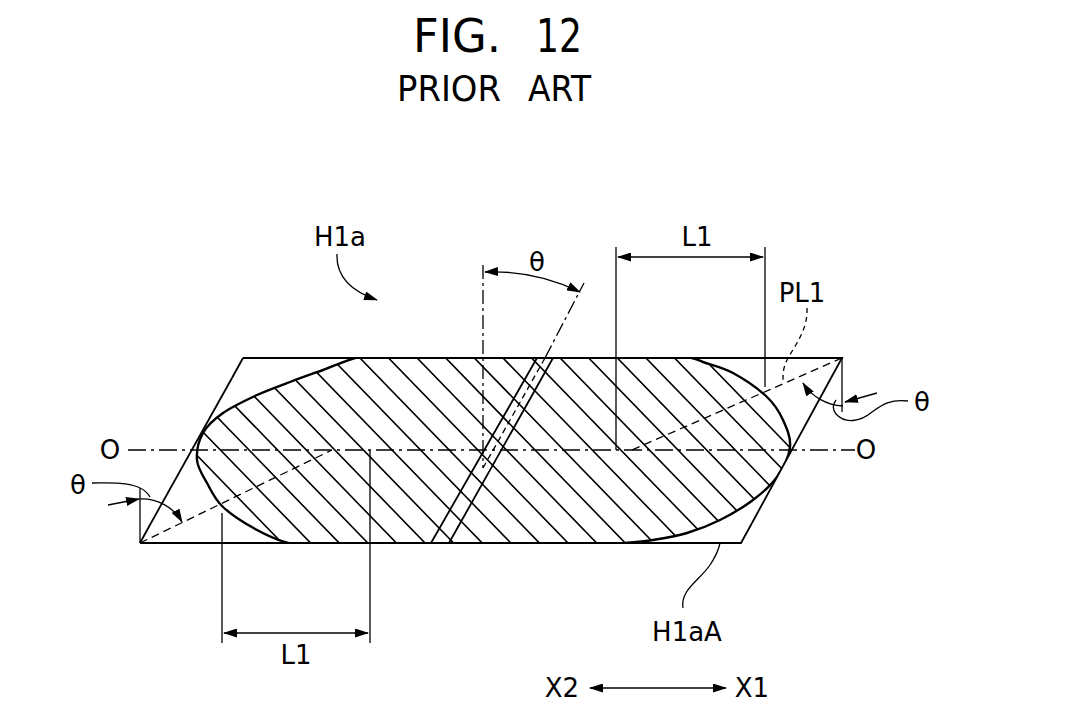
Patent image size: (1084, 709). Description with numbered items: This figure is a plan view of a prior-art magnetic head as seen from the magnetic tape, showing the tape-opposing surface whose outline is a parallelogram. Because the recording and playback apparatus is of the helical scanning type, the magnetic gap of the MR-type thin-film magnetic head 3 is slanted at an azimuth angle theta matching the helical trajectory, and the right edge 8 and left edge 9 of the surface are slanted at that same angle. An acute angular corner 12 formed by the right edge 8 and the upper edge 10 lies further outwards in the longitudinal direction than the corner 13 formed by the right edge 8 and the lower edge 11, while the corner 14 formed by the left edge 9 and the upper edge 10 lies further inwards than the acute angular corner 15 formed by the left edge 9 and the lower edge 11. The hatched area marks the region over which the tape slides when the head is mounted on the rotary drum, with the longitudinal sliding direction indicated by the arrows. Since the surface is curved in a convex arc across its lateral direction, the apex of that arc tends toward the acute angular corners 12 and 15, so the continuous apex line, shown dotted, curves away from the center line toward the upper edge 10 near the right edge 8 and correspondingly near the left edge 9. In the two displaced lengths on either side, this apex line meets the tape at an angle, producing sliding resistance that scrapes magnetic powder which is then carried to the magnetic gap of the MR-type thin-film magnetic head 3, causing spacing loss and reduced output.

The MR-type thin-film magnetic head 3 is at (483, 450).
The right edge 8 is at (763, 512).
The left edge 9 is at (224, 392).
The upper edge 10 is at (842, 358).
The lower edge 11 is at (190, 543).
The acute angular corner 12 is at (842, 358).
The corner 13 is at (741, 543).
The corner 14 is at (243, 358).
The acute angular corner 15 is at (140, 543).